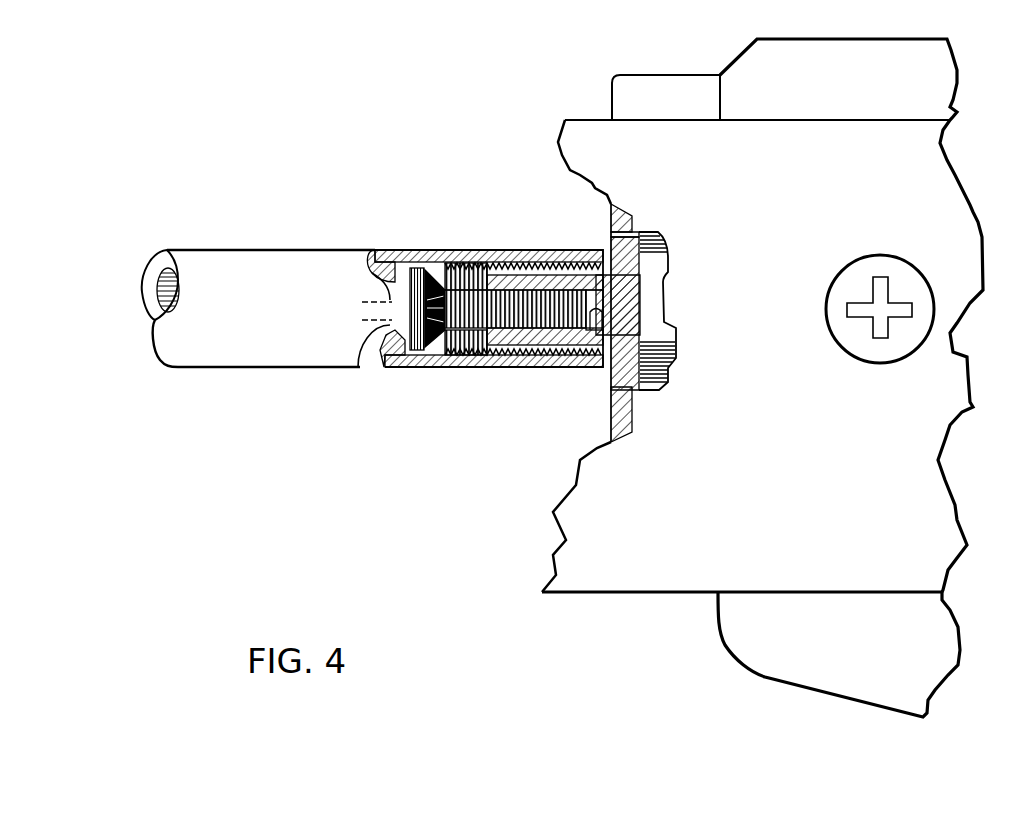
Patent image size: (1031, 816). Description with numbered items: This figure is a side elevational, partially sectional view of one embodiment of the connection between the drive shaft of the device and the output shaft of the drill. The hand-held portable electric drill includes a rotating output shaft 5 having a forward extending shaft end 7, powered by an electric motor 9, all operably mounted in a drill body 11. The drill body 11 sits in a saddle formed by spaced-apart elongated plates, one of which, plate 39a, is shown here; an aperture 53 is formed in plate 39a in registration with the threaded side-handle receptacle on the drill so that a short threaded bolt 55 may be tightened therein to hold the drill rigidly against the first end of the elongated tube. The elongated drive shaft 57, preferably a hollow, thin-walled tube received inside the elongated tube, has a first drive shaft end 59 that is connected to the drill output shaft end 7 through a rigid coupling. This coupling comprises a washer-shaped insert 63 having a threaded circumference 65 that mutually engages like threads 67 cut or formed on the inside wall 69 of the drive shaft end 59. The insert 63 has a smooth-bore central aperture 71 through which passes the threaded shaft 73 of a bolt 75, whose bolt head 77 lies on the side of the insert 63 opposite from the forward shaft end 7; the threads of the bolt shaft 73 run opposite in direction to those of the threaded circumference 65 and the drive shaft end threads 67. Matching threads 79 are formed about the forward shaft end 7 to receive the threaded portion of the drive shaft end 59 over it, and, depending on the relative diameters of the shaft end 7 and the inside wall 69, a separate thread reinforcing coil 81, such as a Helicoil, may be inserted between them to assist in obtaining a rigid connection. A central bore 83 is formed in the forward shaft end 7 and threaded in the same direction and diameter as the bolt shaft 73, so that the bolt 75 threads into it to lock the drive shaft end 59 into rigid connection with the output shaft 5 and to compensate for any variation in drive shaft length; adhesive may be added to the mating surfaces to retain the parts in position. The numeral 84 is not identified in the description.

The rotating output shaft 5 is at (652, 326).
The forward extending shaft end 7 is at (488, 252).
The electric motor 9 is at (893, 687).
The drill body 11 is at (930, 92).
The elongated plate 39a is at (577, 573).
The aperture 53 is at (920, 270).
The short threaded bolt 55 is at (897, 323).
The elongated drive shaft 57 is at (185, 358).
The first drive shaft end 59 is at (540, 368).
The washer-shaped insert 63 is at (452, 250).
The threaded circumference 65 is at (428, 250).
The threads 67 is at (512, 250).
The inside wall 69 is at (363, 347).
The smooth-bore central aperture 71 is at (444, 352).
The threaded shaft 73 is at (550, 250).
The bolt 75 is at (390, 295).
The bolt head 77 is at (390, 318).
The matching threads 79 is at (605, 282).
The thread reinforcing coil 81 is at (580, 250).
The central bore 83 is at (583, 367).
The threaded shank 84 is at (463, 352).